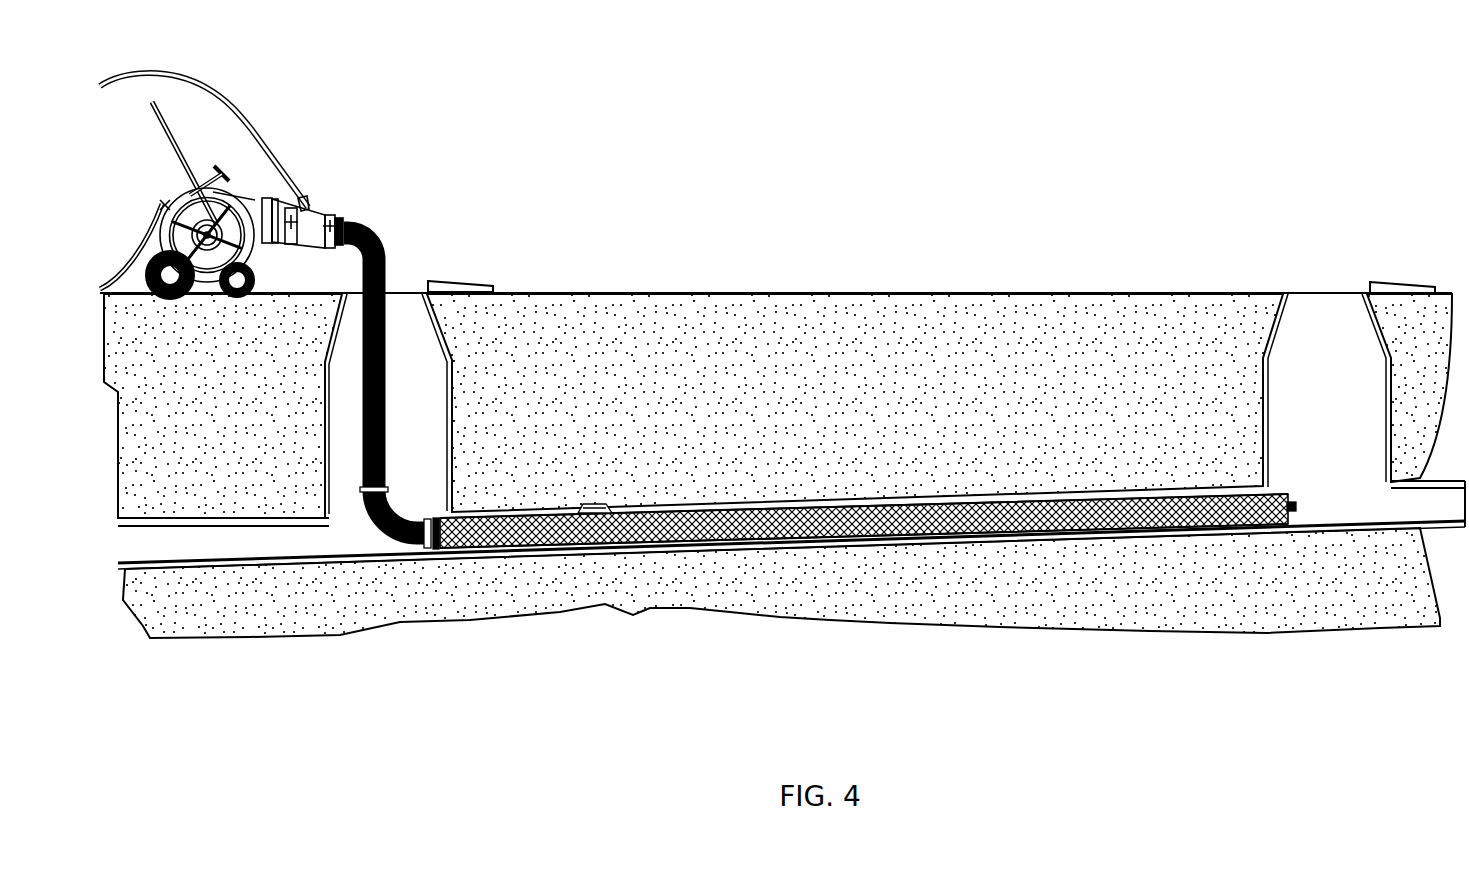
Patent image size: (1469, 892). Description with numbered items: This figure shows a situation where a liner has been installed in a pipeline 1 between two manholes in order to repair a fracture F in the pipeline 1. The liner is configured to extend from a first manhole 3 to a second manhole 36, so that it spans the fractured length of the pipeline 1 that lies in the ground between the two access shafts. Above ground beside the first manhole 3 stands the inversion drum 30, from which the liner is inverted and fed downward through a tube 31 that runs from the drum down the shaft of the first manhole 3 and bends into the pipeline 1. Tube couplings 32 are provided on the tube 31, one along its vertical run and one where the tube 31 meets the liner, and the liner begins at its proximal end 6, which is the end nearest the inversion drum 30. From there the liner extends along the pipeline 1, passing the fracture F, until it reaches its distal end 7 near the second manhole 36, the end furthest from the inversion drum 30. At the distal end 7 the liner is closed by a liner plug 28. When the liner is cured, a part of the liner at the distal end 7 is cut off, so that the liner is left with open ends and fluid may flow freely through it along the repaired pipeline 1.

The pipeline 1 is at (292, 543).
The manhole 3 is at (397, 303).
The second manhole 36 is at (1325, 300).
The proximal end of liner 6 is at (440, 555).
The distal end of liner 7 is at (1291, 518).
The liner plug 28 is at (1298, 506).
The inversion drum 30 is at (296, 167).
The tube 31 is at (367, 233).
The tube coupling 32 is at (358, 492).
The fracture F is at (590, 486).